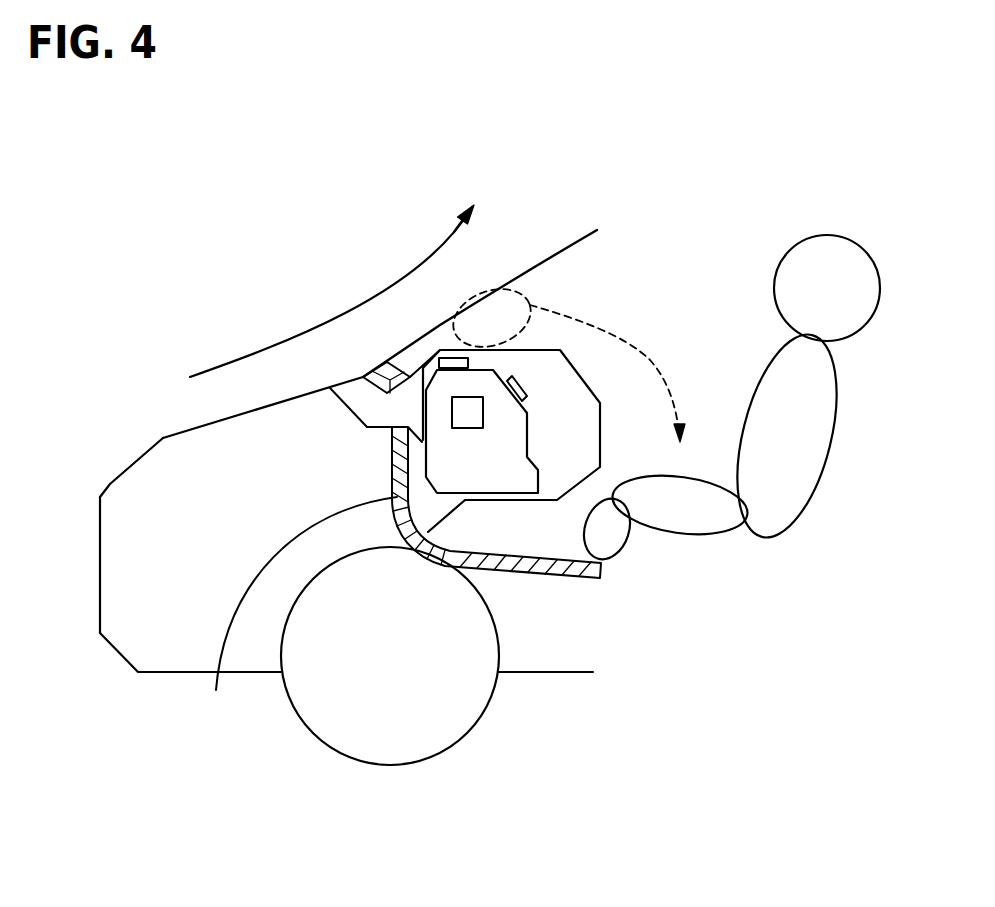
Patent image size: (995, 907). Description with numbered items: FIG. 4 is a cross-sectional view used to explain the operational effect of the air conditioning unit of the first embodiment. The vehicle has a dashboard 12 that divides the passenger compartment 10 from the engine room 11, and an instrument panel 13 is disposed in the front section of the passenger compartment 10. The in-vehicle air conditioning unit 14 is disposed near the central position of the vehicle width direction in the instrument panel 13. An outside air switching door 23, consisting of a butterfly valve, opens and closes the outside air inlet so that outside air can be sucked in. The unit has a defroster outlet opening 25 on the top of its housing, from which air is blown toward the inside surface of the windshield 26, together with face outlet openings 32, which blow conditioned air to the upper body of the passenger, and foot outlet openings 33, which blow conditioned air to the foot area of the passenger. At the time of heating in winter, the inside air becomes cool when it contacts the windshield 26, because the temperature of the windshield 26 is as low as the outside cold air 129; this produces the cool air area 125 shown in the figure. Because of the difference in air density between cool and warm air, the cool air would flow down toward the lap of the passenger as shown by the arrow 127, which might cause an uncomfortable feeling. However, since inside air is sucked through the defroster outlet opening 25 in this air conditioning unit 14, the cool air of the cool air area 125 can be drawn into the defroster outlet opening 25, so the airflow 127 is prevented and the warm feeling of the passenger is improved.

The passenger compartment 10 is at (705, 290).
The engine room 11 is at (172, 570).
The dashboard 12 is at (391, 476).
The instrument panel 13 is at (576, 368).
The in-vehicle air conditioning unit 14 is at (484, 445).
The outside air switching door 23 is at (347, 412).
The defroster outlet opening 25 is at (444, 358).
The windshield 26 is at (480, 298).
The face outlet opening 32 is at (525, 389).
The foot outlet opening 33 is at (216, 690).
The cool air area 125 is at (520, 292).
The arrow 127 is at (643, 345).
The outside cold air 129 is at (357, 315).